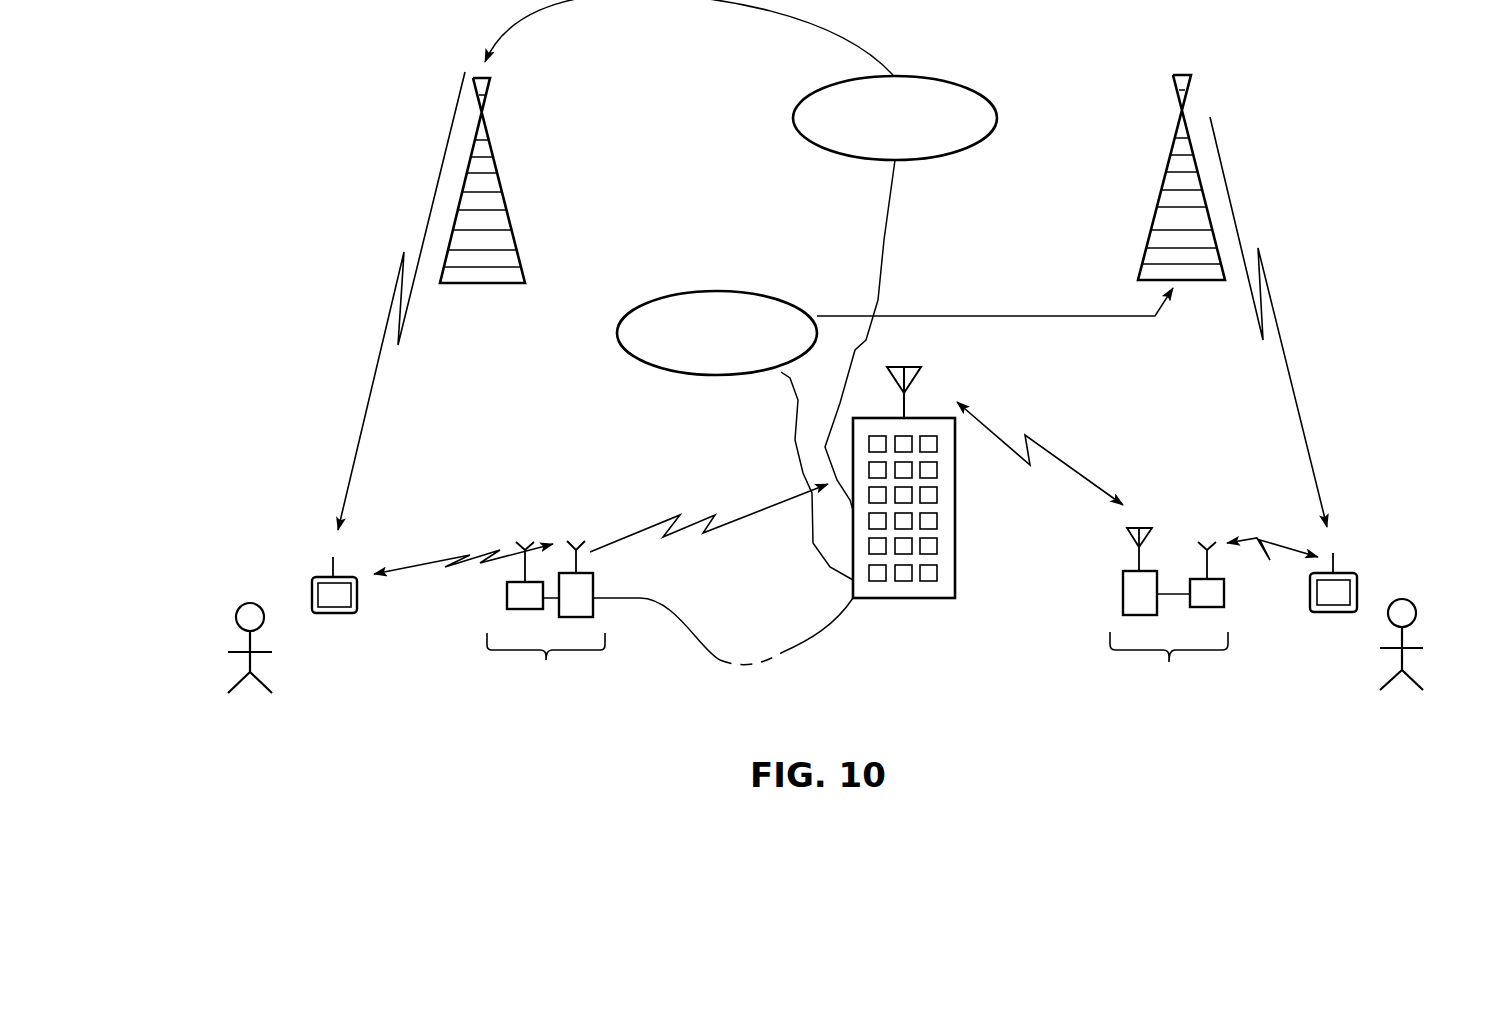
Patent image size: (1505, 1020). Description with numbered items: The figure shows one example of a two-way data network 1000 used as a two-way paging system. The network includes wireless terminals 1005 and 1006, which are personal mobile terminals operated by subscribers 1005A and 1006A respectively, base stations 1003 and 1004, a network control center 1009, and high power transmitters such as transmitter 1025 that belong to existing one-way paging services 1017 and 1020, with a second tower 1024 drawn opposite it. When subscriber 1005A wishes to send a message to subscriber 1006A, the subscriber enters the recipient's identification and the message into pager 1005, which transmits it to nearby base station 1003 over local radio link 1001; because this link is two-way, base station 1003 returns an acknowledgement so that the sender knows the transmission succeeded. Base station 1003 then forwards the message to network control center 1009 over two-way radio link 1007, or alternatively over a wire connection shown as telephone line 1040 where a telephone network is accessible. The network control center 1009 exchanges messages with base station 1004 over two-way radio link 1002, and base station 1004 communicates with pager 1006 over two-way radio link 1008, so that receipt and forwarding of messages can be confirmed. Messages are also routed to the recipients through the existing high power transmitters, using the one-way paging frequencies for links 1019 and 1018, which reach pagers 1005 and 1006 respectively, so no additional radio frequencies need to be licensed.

The two-way data network 1000 is at (288, 209).
The local radio link 1001 is at (431, 556).
The radio link 1002 is at (1060, 458).
The base station 1003 is at (546, 617).
The base station 1004 is at (1169, 610).
The wireless terminal 1005 is at (312, 586).
The subscriber 1005A is at (236, 612).
The wireless terminal 1006 is at (1357, 575).
The subscriber 1006A is at (1414, 605).
The radio link 1007 is at (750, 520).
The radio link 1008 is at (1265, 540).
The network control center 1009 is at (930, 598).
The one-way paging service 1017 is at (716, 375).
The link 1018 is at (1299, 390).
The link 1019 is at (368, 400).
The one-way paging service 1020 is at (916, 155).
The paging transmitter tower 1024 is at (486, 122).
The high power transmitter 1025 is at (1178, 103).
The telephone line 1040 is at (800, 650).